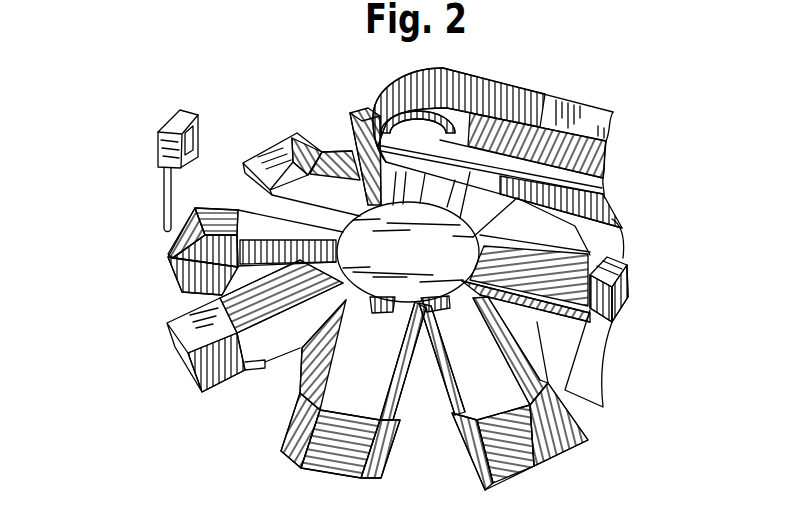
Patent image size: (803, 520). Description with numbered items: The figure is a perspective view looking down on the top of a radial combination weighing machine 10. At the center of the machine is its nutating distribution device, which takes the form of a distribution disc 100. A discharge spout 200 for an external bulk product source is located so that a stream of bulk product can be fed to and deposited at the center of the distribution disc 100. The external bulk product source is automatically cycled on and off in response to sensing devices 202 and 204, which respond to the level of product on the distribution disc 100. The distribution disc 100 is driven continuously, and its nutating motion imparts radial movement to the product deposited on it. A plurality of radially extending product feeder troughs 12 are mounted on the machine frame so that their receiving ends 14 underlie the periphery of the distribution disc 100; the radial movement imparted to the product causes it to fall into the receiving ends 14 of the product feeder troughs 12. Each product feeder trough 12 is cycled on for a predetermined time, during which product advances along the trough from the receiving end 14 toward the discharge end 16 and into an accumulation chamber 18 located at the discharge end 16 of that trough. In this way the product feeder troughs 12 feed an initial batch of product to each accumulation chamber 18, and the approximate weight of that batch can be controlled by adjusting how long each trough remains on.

The radial combination weighing machine 10 is at (254, 68).
The product feeder trough 12 is at (345, 150).
The receiving end 14 is at (350, 215).
The discharge end 16 is at (331, 203).
The accumulation chamber 18 is at (282, 137).
The distribution disc 100 is at (427, 260).
The discharge spout 200 is at (592, 117).
The sensing device 202 is at (618, 250).
The sensing device 204 is at (157, 152).